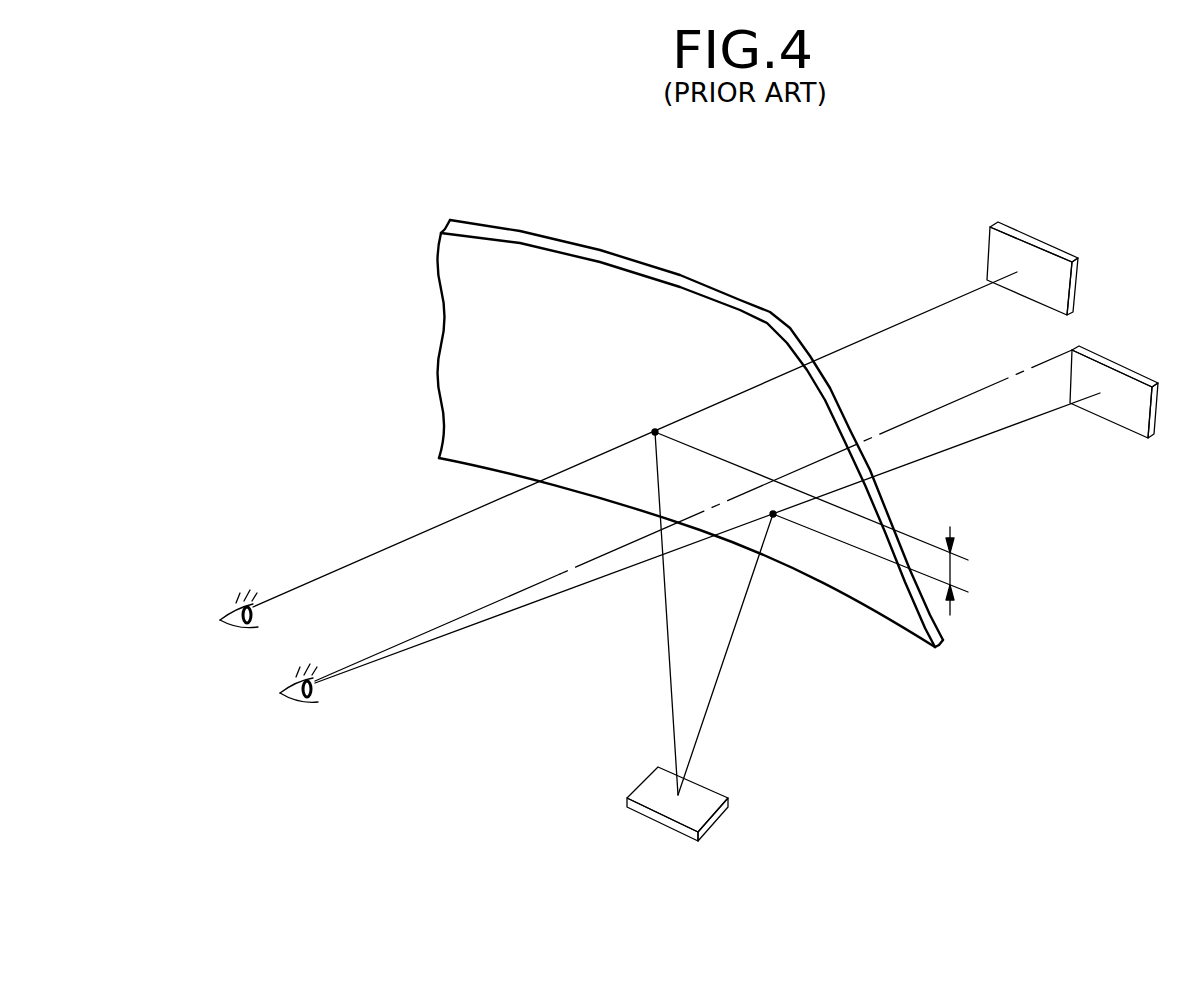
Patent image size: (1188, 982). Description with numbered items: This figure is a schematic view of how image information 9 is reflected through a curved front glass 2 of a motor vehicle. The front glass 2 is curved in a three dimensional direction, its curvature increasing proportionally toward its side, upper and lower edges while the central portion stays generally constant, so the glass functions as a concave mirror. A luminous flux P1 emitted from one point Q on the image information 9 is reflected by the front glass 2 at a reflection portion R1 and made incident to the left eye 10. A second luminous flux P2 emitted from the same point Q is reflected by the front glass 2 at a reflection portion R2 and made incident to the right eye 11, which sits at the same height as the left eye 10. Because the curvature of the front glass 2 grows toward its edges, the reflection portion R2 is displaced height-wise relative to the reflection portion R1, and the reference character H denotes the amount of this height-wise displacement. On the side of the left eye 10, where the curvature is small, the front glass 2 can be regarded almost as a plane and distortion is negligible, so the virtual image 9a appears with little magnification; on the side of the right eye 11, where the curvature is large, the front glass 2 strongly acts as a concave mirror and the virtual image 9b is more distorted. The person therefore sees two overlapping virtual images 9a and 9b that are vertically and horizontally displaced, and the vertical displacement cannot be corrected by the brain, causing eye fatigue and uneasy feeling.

The front glass 2 is at (633, 308).
The image information 9 is at (693, 788).
The virtual image 9a is at (1037, 240).
The virtual image 9b is at (1118, 370).
The left eye 10 is at (233, 602).
The right eye 11 is at (283, 684).
The reflection portion R1 is at (653, 430).
The reflection portion R2 is at (773, 514).
The luminous flux P1 is at (667, 692).
The luminous flux P2 is at (722, 673).
The point Q is at (676, 797).
The amount of height-wise displacement H is at (958, 577).